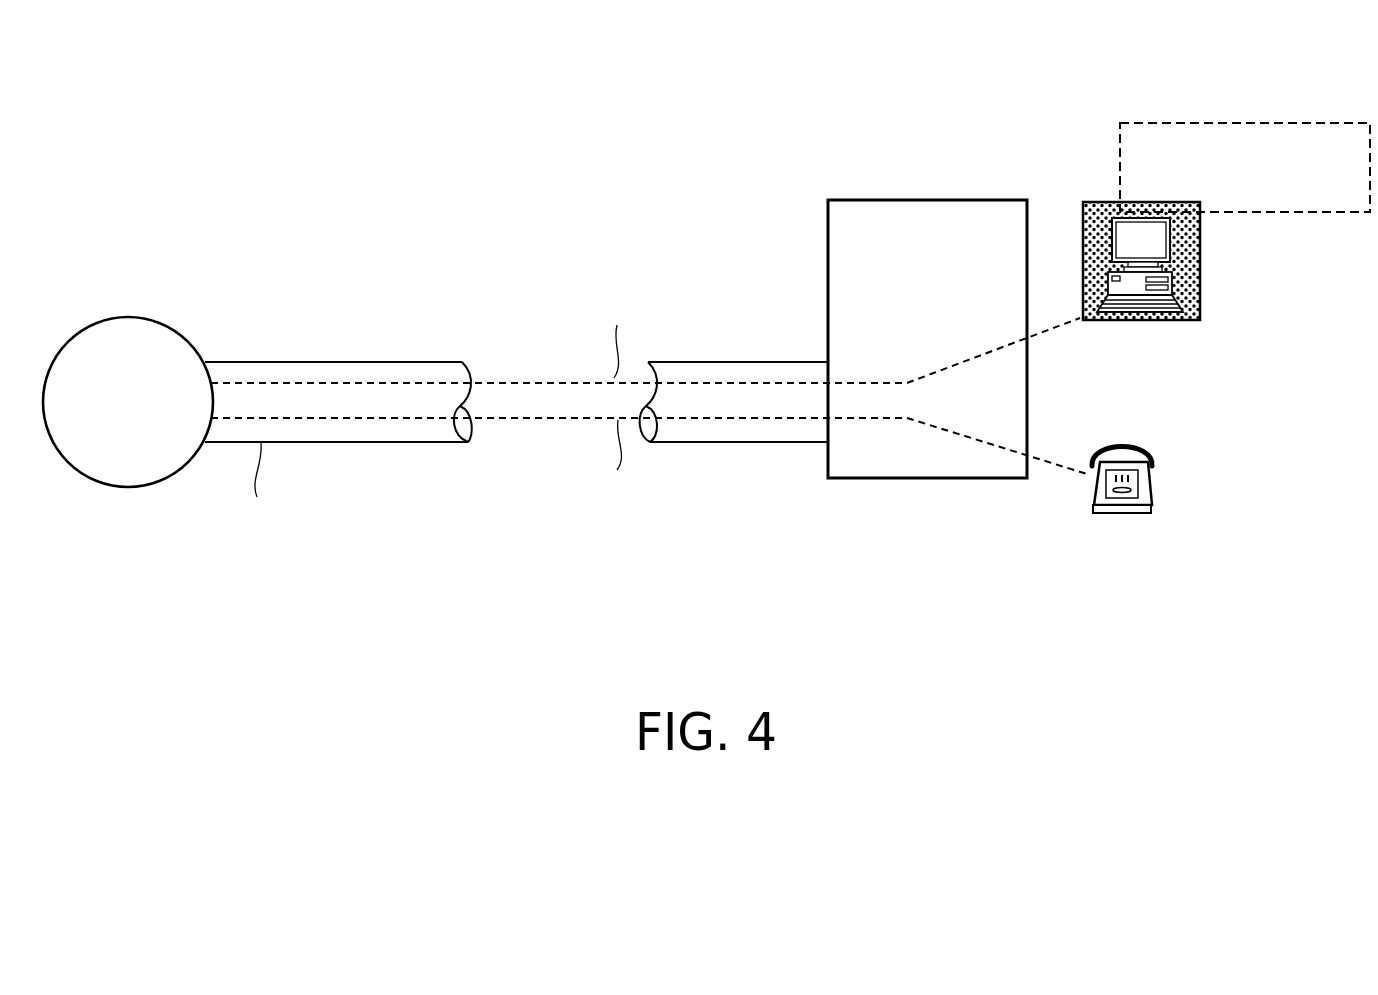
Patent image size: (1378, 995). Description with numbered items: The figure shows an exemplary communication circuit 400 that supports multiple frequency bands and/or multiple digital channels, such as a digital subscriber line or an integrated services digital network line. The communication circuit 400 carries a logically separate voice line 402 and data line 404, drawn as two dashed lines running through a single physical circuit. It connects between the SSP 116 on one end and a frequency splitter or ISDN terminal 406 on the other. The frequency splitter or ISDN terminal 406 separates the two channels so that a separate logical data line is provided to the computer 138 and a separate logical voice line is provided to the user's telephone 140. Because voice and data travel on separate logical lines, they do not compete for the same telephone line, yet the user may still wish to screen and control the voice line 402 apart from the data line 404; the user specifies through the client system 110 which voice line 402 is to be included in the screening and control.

The SSP 116 is at (131, 317).
The communication circuit 400 is at (453, 522).
The data line 404 is at (500, 378).
The voice line 402 is at (510, 420).
The frequency splitter or ISDN terminal 406 is at (935, 480).
The client system 110 is at (1161, 123).
The computer 138 is at (1199, 320).
The user's telephone 140 is at (1118, 512).